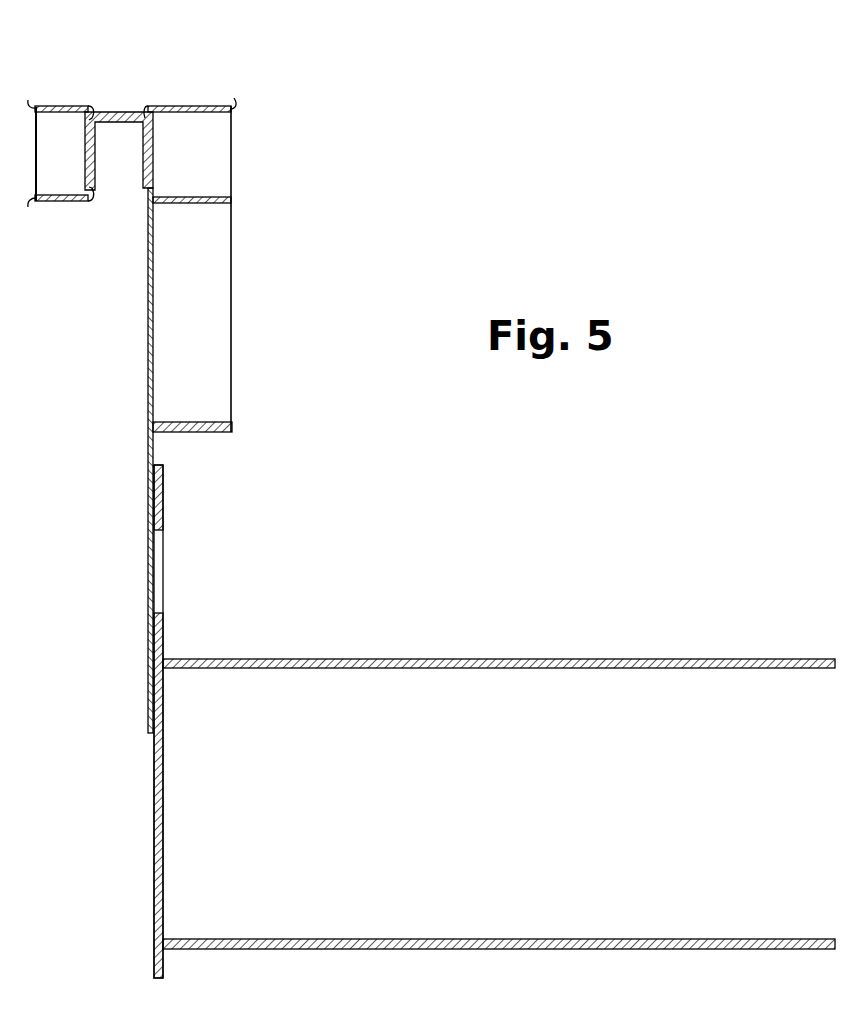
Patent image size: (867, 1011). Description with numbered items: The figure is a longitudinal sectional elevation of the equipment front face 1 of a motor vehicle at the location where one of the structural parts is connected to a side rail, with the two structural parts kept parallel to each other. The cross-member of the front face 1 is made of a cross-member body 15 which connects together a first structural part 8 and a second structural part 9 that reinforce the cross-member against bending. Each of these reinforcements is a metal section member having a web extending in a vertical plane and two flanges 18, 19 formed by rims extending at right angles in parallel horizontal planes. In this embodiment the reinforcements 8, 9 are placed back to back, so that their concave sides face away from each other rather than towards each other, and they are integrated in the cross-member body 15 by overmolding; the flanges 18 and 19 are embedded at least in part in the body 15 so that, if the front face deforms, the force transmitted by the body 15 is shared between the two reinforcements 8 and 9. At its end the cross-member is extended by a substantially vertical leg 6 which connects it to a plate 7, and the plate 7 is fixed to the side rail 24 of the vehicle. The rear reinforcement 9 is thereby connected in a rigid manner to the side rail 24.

The equipment front face 1 is at (88, 335).
The leg 6 is at (208, 432).
The plate 7 is at (149, 681).
The first structural part 8 is at (43, 98).
The second structural part 9 is at (217, 105).
The cross-member body 15 is at (126, 104).
The flange 18 is at (75, 105).
The flange 19 is at (62, 203).
The side rail 24 is at (444, 658).